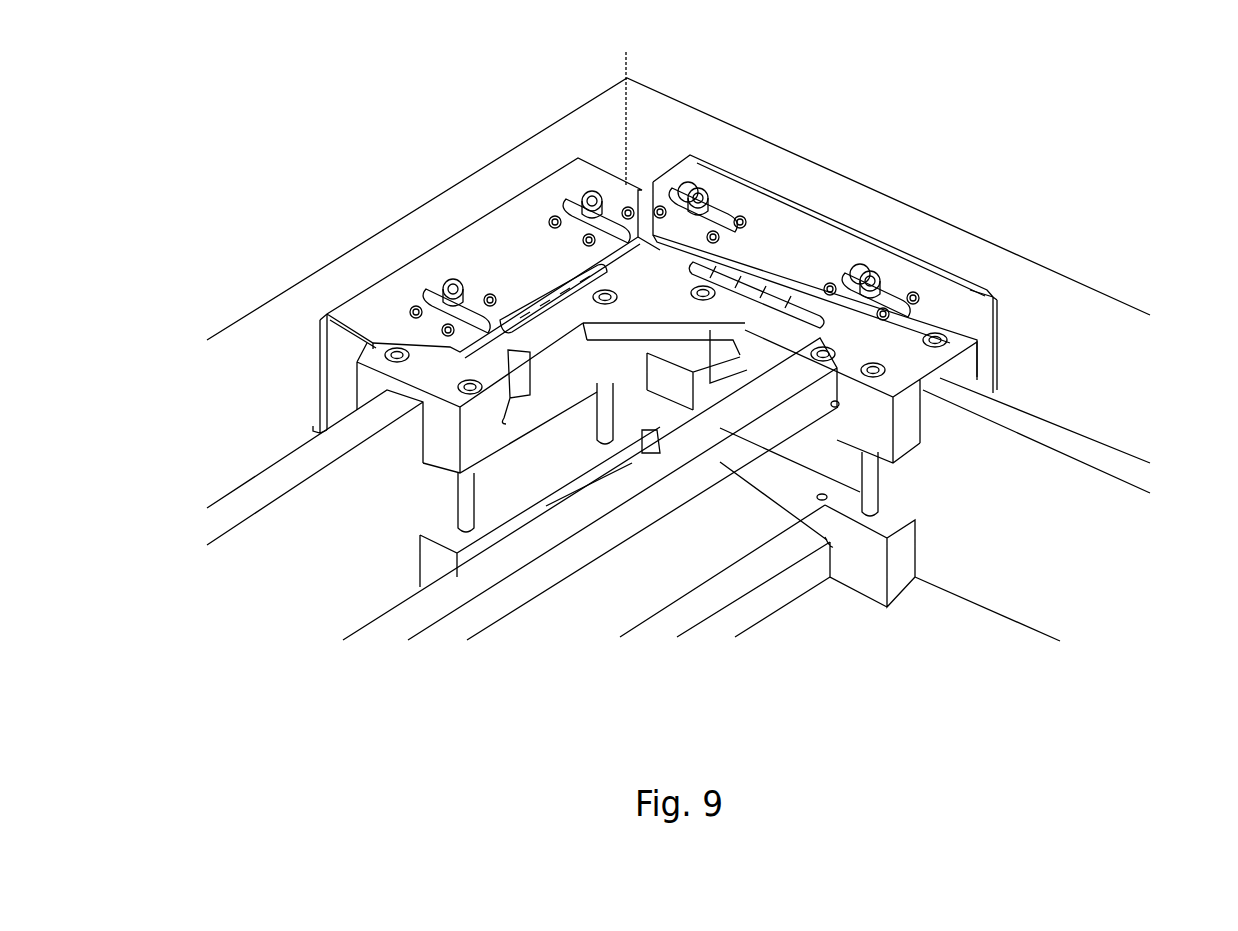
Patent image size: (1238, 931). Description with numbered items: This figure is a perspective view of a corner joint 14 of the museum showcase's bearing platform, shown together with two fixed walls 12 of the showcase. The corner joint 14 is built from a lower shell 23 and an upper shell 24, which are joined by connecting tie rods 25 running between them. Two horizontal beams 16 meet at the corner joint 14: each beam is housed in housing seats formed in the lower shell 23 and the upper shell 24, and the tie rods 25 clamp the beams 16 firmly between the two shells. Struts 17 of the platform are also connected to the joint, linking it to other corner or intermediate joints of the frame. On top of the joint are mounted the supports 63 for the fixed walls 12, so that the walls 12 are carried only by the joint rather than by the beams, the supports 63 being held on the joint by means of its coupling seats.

The fixed and/or openable walls 12 is at (290, 265).
The corner joint 14 is at (643, 172).
The horizontal beams 16 is at (274, 547).
The struts 17 is at (517, 593).
The lower shell 23 is at (900, 588).
The upper shell 24 is at (973, 367).
The connecting tie rods 25 is at (878, 467).
The supports for fixed walls 63 is at (823, 213).